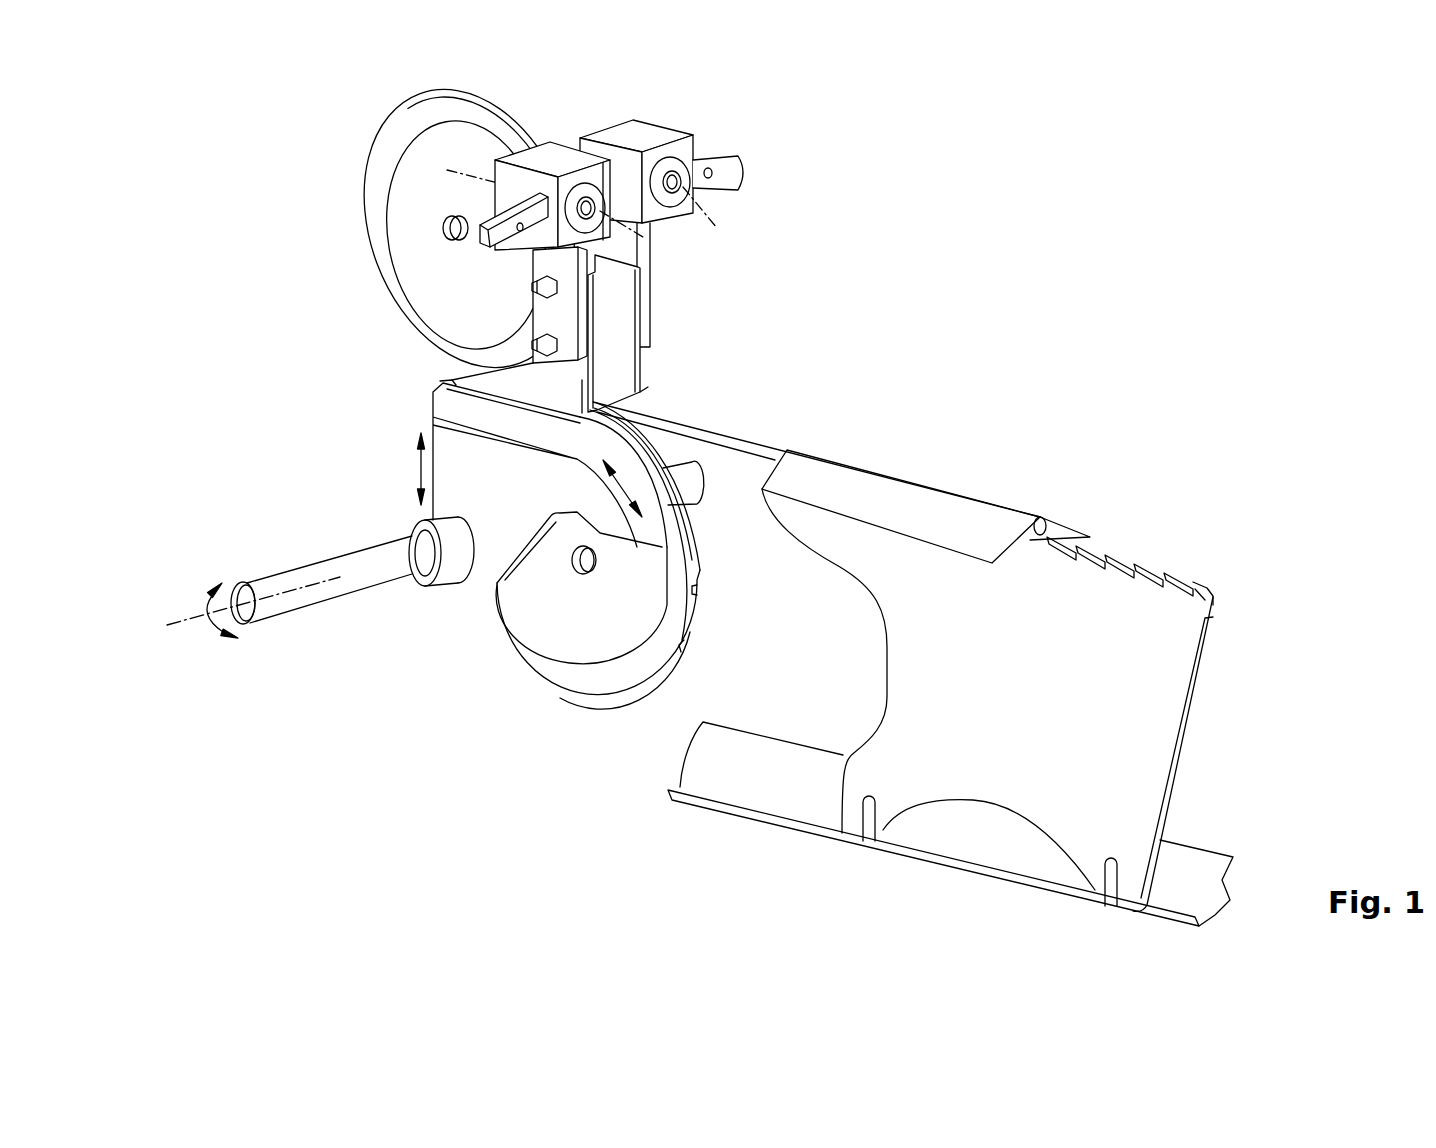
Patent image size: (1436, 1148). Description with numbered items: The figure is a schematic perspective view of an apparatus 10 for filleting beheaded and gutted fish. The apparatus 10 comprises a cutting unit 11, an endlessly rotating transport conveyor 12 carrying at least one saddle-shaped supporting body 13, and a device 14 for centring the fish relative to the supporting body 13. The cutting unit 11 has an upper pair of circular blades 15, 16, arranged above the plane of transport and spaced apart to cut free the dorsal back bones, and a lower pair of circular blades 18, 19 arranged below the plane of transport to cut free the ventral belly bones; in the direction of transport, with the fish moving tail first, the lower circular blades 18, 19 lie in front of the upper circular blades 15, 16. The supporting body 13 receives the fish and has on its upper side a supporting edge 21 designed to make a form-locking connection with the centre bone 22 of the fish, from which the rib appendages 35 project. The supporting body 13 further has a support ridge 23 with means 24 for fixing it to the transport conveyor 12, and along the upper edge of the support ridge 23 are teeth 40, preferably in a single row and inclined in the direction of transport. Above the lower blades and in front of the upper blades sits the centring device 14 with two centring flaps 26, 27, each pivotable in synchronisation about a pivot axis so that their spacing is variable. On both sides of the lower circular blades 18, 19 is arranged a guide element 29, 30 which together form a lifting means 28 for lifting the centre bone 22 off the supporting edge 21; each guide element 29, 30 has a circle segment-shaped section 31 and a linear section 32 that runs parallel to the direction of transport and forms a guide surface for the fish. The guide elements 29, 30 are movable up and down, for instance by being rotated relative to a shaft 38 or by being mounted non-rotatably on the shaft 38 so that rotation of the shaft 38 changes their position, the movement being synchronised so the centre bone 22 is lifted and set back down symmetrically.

The apparatus 10 is at (964, 248).
The cutting unit 11 is at (326, 222).
The transport conveyor 12 is at (1218, 827).
The supporting body 13 is at (1239, 645).
The device for centring the fish 14 is at (728, 127).
The circular blade 15 is at (389, 135).
The circular blade 16 is at (508, 122).
The circular blade 18 is at (612, 690).
The circular blade 19 is at (690, 635).
The supporting edge 21 is at (1150, 545).
The centre bone 22 is at (1003, 513).
The support ridge 23 is at (1032, 692).
The means for fixing 24 is at (867, 802).
The centring flap 26 is at (503, 375).
The centring flap 27 is at (628, 367).
The lifting means 28 is at (474, 588).
The guide element 29 is at (445, 473).
The guide element 30 is at (675, 439).
The circle segment-shaped section 31 is at (647, 533).
The linear section 32 is at (448, 403).
The rib appendages 35 is at (818, 462).
The shaft 38 is at (303, 598).
The teeth 40 is at (1107, 553).